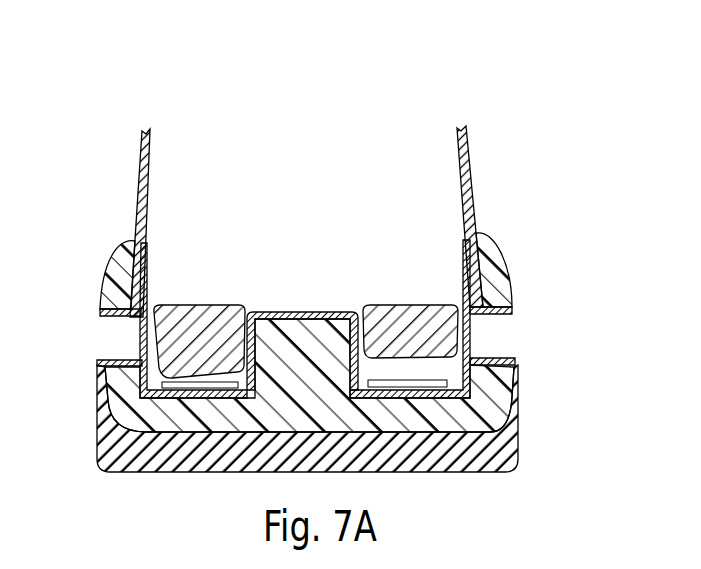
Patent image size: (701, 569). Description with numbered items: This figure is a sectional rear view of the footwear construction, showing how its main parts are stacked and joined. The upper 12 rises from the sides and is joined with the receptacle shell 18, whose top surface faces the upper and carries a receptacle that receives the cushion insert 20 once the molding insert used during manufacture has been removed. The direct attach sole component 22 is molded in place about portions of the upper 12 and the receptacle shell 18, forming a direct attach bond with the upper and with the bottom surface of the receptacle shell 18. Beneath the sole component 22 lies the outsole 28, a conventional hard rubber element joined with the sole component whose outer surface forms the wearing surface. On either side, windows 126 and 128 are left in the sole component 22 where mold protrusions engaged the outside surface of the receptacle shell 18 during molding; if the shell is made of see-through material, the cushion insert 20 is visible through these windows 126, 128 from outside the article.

The upper 12 is at (474, 163).
The receptacle shell 18 is at (302, 312).
The cushion insert 20 is at (204, 305).
The direct attach sole component 22 is at (502, 267).
The outsole 28 is at (512, 468).
The window 126 is at (497, 358).
The window 128 is at (117, 360).